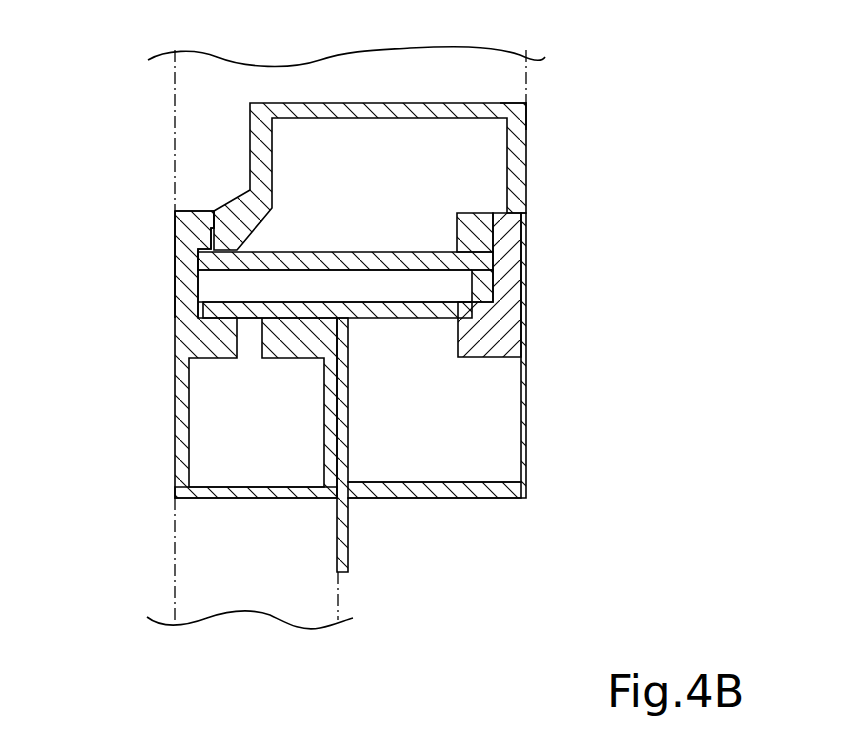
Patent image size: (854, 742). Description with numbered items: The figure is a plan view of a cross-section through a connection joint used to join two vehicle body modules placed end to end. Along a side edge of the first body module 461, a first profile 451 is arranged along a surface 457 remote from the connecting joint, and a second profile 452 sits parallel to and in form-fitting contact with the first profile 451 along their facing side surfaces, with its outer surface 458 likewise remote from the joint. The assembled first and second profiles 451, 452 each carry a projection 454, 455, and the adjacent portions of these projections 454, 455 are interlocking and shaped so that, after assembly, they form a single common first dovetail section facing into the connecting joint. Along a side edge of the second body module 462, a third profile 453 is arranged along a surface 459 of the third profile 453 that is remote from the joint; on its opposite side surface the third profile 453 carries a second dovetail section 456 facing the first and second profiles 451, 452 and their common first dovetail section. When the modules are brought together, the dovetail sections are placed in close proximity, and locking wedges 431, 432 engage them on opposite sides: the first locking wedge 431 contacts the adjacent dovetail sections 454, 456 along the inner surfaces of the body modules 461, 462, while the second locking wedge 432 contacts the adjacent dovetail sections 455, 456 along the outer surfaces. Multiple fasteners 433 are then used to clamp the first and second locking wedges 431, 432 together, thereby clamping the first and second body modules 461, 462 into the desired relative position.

The first locking wedge 431 is at (175, 252).
The second locking wedge 432 is at (527, 317).
The fastener 433 is at (308, 286).
The first profile 451 is at (175, 432).
The second profile 452 is at (527, 428).
The third profile 453 is at (520, 154).
The projection of first profile 454 is at (237, 303).
The projection of second profile 455 is at (437, 302).
The second dovetail section 456 is at (380, 253).
The surface remote from the connecting joint 457 is at (225, 498).
The second bottom wall 458 is at (473, 499).
The surface of the third profile 459 is at (495, 103).
The first body module 461 is at (291, 580).
The second body module 462 is at (413, 89).